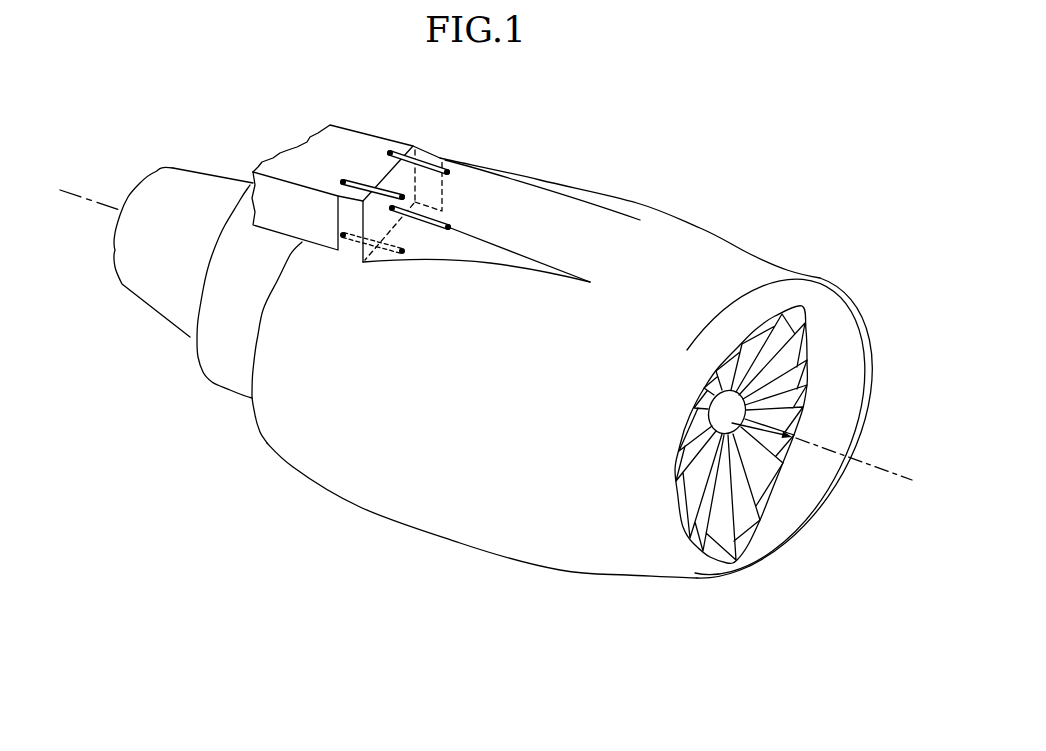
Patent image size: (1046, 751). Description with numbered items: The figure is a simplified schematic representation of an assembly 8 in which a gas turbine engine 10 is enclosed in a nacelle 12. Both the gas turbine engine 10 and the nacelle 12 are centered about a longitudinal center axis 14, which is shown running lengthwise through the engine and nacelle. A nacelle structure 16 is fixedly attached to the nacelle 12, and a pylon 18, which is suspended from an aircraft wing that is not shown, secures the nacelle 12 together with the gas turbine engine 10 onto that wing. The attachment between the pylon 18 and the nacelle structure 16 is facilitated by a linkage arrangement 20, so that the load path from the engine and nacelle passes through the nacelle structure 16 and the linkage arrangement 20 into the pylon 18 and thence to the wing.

The assembly 8 is at (536, 70).
The gas turbine engine 10 is at (778, 455).
The nacelle 12 is at (636, 203).
The longitudinal center axis 14 is at (857, 462).
The nacelle structure 16 is at (485, 173).
The pylon 18 is at (353, 147).
The linkage arrangement 20 is at (431, 144).